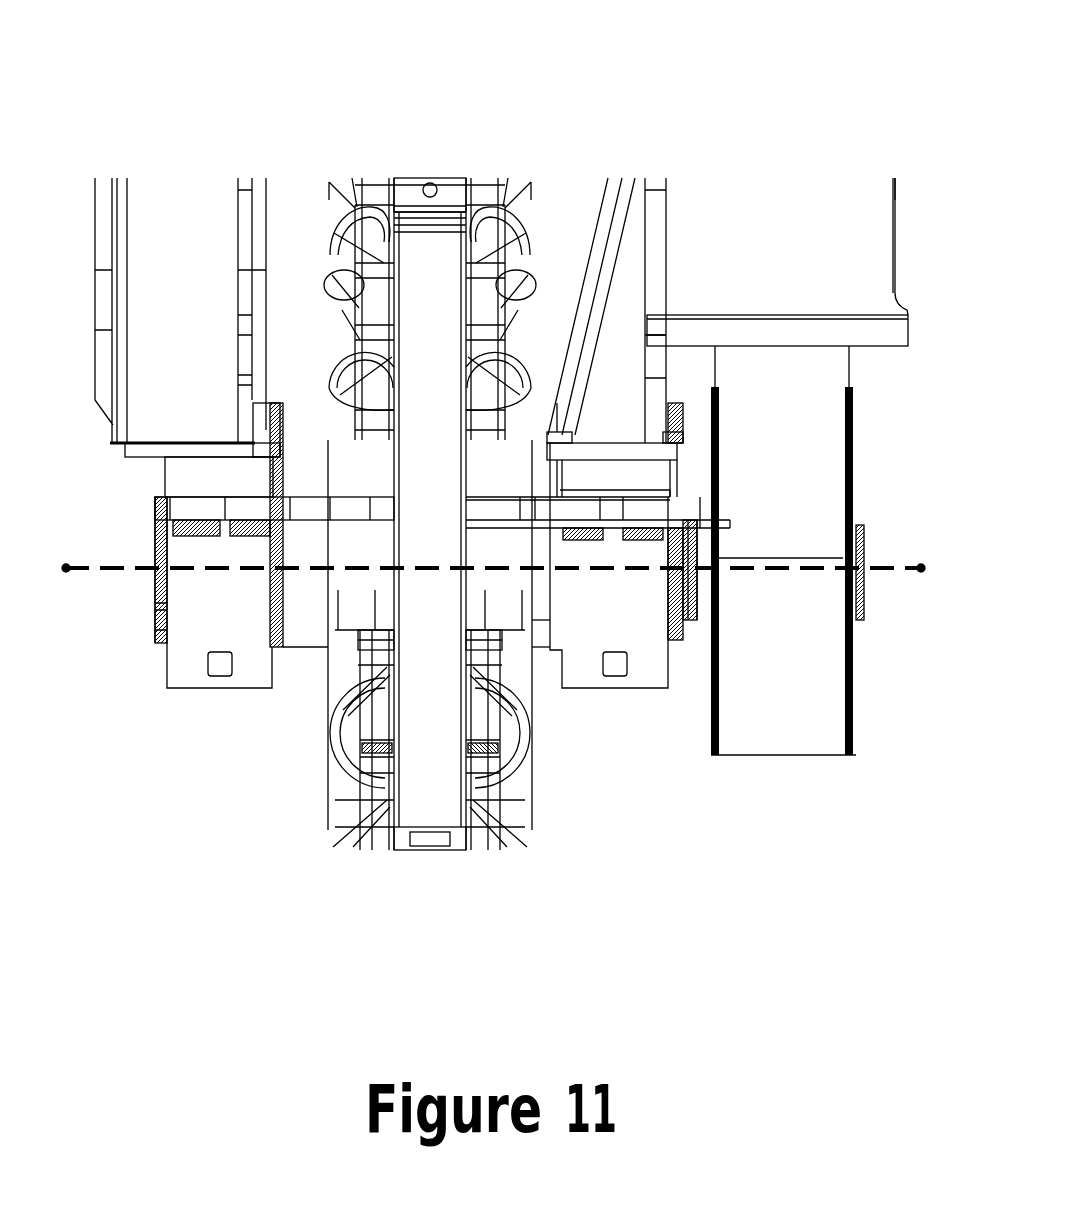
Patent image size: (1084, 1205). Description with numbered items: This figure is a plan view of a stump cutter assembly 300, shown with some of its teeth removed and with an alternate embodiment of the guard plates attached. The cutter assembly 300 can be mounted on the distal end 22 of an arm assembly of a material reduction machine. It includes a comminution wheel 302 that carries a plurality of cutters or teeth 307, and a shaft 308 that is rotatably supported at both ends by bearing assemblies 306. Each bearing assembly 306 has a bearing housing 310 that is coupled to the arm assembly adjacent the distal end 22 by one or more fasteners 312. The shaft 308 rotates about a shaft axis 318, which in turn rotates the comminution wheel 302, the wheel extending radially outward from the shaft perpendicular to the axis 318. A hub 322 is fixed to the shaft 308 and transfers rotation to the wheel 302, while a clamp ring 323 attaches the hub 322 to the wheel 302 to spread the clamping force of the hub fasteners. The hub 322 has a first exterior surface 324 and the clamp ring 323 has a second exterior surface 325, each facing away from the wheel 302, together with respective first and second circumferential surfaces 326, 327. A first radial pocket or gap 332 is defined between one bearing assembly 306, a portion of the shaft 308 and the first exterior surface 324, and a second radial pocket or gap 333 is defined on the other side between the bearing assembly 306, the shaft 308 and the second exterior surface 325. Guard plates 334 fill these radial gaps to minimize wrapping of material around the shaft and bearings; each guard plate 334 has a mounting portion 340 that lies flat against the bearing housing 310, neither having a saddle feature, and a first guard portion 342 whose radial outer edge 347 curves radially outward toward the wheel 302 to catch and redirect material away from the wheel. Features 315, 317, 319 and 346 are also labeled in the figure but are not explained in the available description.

The distal end 22 is at (140, 487).
The cutter assembly 300 is at (815, 137).
The comminution wheel 302 is at (430, 257).
The bearing assembly 306 is at (690, 655).
The cutters or teeth 307 is at (483, 243).
The shaft 308 is at (527, 617).
The bearing housing 310 is at (637, 477).
The fasteners 312 is at (680, 555).
The mounting plate 315 is at (871, 368).
The bracket plate 317 is at (806, 390).
The shaft axis 318 is at (83, 572).
The outer support rod 319 is at (853, 687).
The hub 322 is at (350, 603).
The clamp ring 323 is at (547, 435).
The first exterior surface 324 is at (323, 620).
The second exterior surface 325 is at (503, 620).
The first circumferential surface 326 is at (382, 590).
The second circumferential surface 327 is at (473, 593).
The first radial pocket 332 is at (308, 685).
The second radial pocket 333 is at (541, 692).
The guard plate 334 is at (230, 494).
The mounting portion 340 is at (650, 545).
The first guard portion 342 is at (577, 452).
The upper left winding 346 is at (400, 505).
The radial outer edge 347 is at (340, 494).